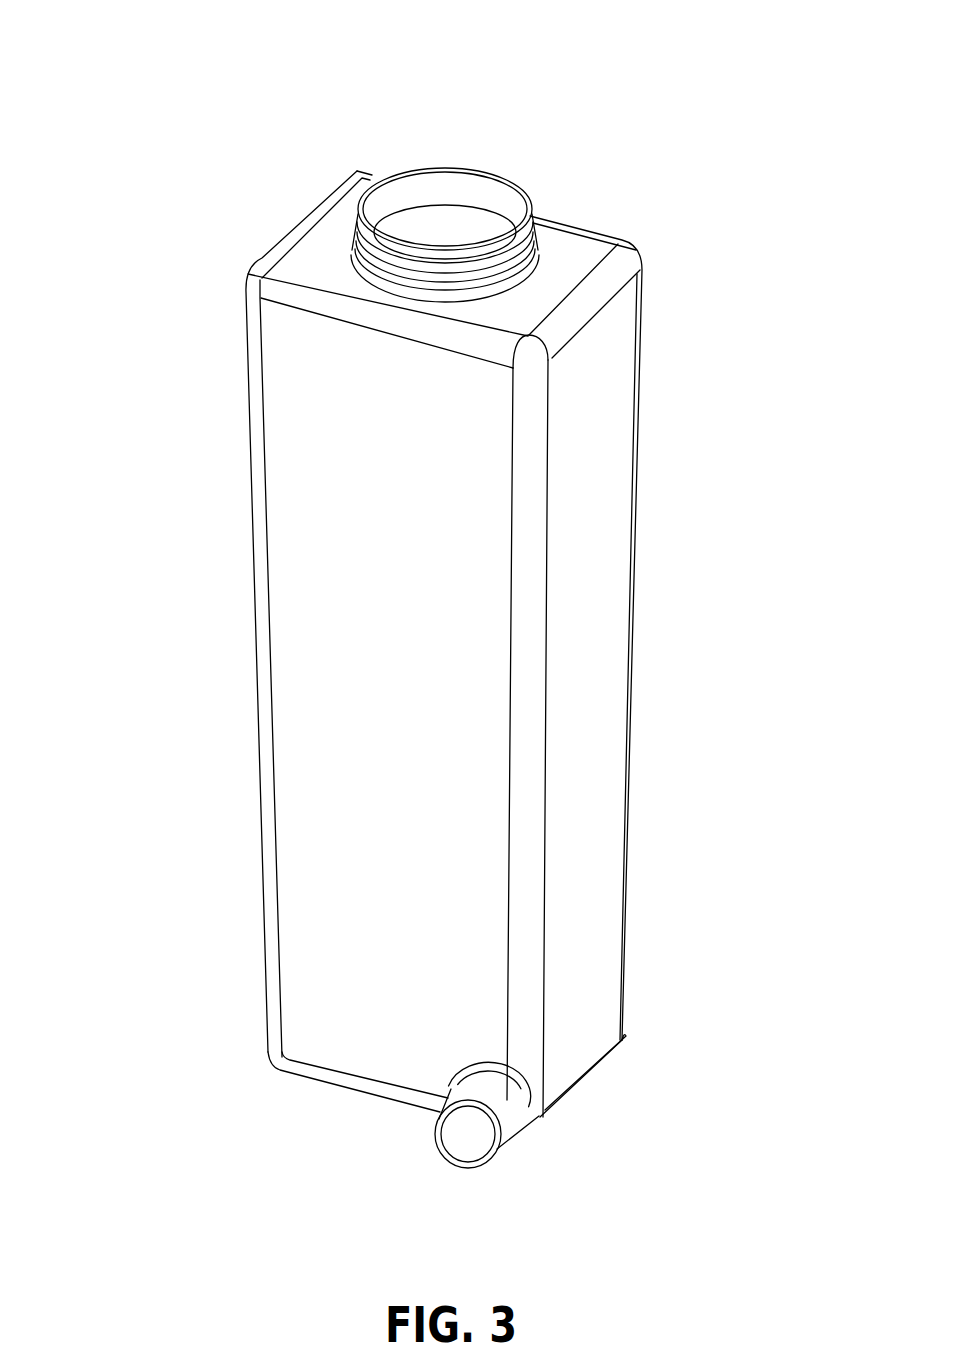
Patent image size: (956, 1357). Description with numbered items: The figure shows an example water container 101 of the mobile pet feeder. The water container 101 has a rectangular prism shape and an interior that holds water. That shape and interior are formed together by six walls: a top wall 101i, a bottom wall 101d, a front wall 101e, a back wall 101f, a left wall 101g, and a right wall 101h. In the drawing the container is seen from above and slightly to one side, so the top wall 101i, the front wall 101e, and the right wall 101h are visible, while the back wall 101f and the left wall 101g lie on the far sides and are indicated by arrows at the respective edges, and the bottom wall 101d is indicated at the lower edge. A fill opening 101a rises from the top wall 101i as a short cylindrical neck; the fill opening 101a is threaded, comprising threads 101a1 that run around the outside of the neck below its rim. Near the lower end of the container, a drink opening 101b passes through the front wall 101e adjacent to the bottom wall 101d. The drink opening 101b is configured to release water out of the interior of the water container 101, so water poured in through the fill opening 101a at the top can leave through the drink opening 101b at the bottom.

The water container 101 is at (587, 48).
The fill opening 101a is at (438, 147).
The threads 101a1 is at (530, 233).
The drink opening 101b is at (542, 1160).
The bottom wall 101d is at (355, 1129).
The front wall 101e is at (415, 694).
The back wall 101f is at (662, 607).
The left wall 101g is at (209, 602).
The right wall 101h is at (612, 694).
The top wall 101i is at (328, 253).